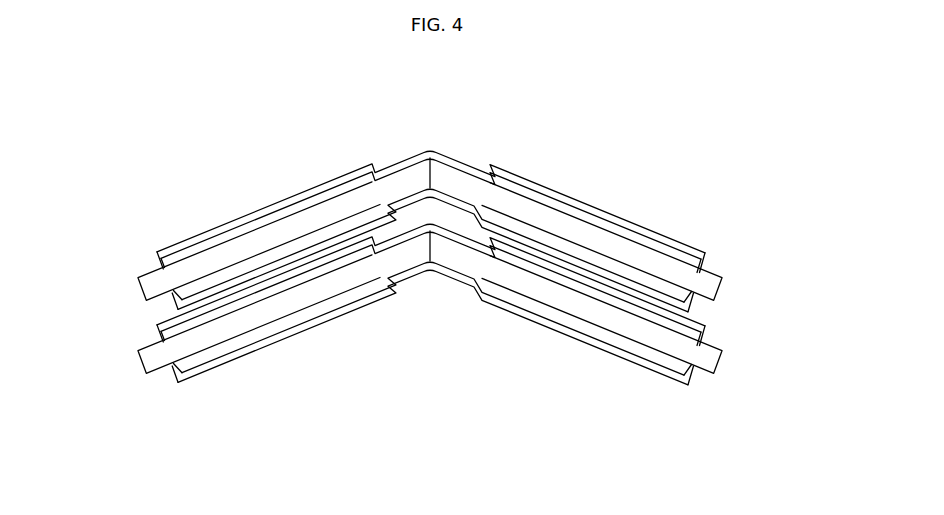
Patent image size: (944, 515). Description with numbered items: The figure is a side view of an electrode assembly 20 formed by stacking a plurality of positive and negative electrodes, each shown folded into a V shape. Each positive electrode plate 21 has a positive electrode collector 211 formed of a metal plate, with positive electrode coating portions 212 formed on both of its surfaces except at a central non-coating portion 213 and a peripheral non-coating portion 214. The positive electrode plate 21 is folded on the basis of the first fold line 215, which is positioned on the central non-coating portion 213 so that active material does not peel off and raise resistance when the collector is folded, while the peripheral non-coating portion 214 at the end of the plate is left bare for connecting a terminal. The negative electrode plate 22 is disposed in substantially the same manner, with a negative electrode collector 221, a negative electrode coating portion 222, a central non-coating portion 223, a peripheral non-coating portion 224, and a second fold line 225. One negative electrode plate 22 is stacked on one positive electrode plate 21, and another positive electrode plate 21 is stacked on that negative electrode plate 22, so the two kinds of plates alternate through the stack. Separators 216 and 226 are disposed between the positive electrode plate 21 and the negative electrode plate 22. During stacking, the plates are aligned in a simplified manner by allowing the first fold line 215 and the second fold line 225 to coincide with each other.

The electrode assembly 20 is at (150, 160).
The positive electrode plate 21 is at (134, 368).
The negative electrode plate 22 is at (134, 297).
The positive electrode collector 211 is at (722, 360).
The positive electrode coating portion 212 is at (598, 332).
The central non-coating portion 213 is at (405, 257).
The peripheral non-coating portion 214 is at (698, 382).
The first fold line 215 is at (433, 258).
The separator 216 is at (536, 318).
The negative electrode collector 221 is at (720, 283).
The negative electrode coating portion 222 is at (595, 220).
The central non-coating portion 223 is at (402, 176).
The peripheral non-coating portion 224 is at (713, 273).
The second fold line 225 is at (433, 166).
The separator 226 is at (545, 188).